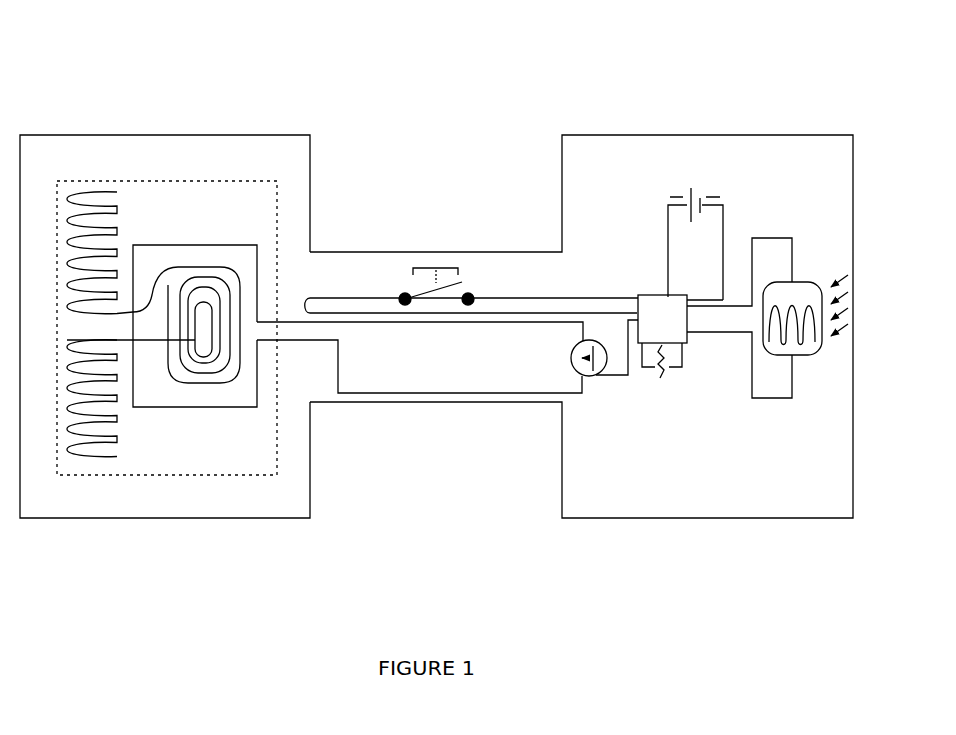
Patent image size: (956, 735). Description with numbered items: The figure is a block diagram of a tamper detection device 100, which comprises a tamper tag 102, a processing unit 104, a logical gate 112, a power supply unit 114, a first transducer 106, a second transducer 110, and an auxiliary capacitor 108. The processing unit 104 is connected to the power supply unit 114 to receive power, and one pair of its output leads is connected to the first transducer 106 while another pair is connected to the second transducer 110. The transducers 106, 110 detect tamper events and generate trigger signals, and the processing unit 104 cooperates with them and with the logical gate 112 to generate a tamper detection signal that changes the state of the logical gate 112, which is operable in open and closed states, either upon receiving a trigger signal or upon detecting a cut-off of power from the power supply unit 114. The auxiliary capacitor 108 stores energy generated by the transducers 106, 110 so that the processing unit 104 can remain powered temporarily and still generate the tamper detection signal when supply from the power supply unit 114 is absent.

The tamper detection device 100 is at (478, 34).
The tamper tag 102 is at (166, 180).
The processing unit 104 is at (651, 294).
The first transducer 106 is at (436, 267).
The auxiliary capacitor 108 is at (664, 386).
The second transducer 110 is at (806, 280).
The logical gate 112 is at (592, 386).
The power supply unit 114 is at (691, 182).